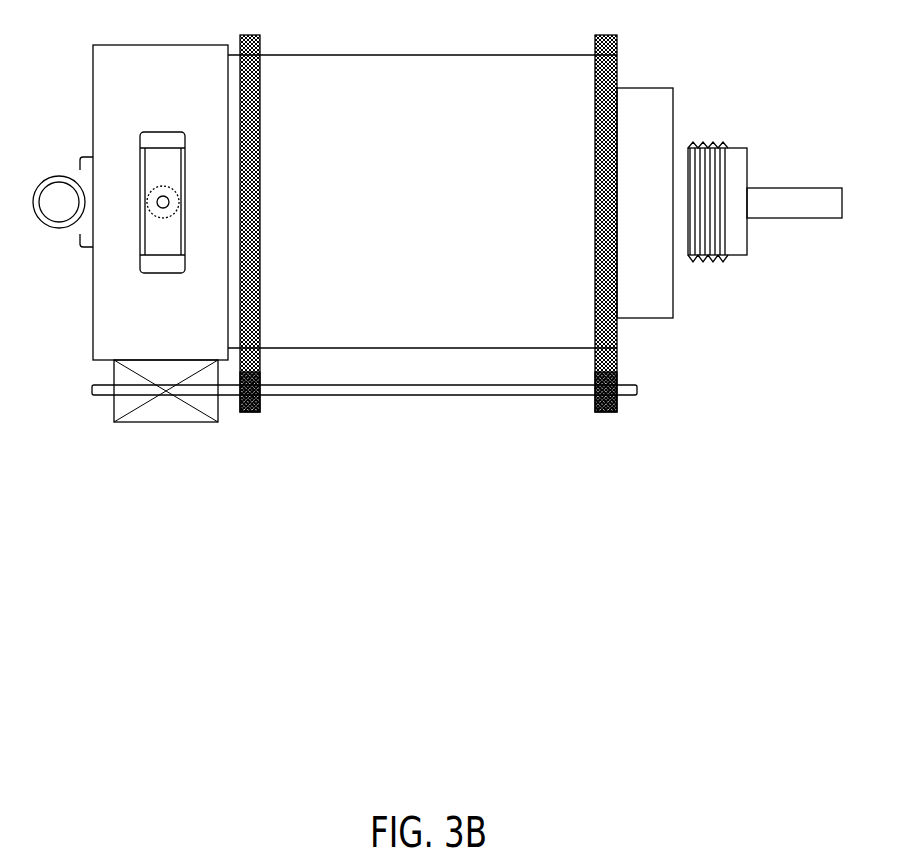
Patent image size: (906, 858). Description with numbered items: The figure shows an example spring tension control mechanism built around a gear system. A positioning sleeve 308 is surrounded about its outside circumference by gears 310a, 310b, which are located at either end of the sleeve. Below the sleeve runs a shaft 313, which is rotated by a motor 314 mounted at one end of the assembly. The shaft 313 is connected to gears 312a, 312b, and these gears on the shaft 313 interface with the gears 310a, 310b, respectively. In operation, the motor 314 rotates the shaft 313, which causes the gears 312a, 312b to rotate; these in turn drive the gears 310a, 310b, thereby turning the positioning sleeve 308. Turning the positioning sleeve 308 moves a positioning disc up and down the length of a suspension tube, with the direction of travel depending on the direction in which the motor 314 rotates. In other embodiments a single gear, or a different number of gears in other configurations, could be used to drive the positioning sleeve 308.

The positioning sleeve 308 is at (403, 57).
The gear 310a is at (250, 38).
The gear 310b is at (610, 38).
The gear 312a is at (250, 413).
The gear 312b is at (607, 408).
The shaft 313 is at (415, 397).
The motor 314 is at (112, 418).